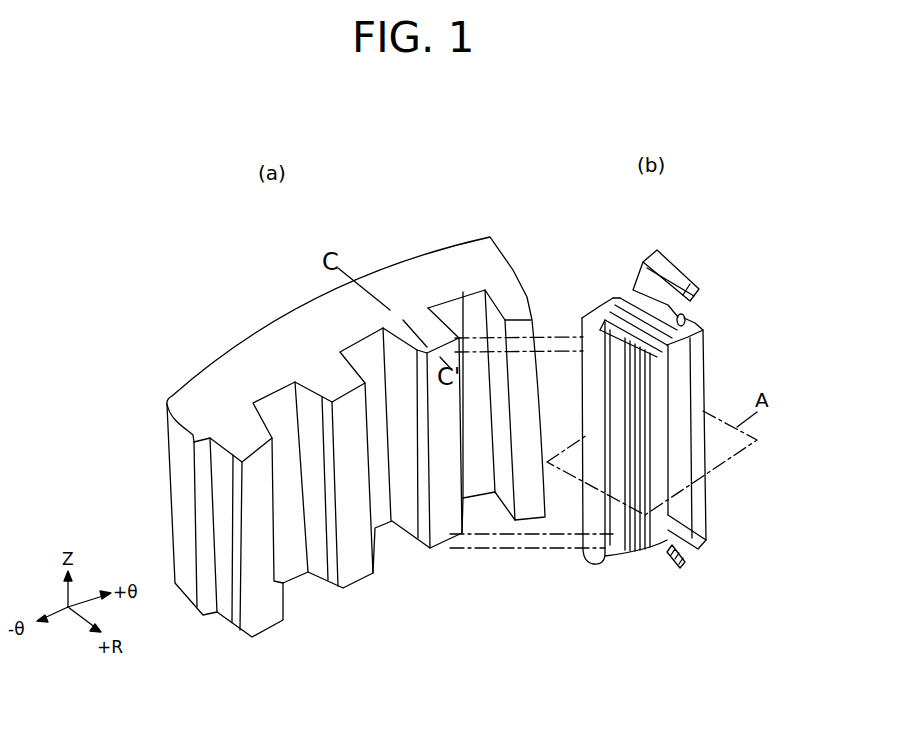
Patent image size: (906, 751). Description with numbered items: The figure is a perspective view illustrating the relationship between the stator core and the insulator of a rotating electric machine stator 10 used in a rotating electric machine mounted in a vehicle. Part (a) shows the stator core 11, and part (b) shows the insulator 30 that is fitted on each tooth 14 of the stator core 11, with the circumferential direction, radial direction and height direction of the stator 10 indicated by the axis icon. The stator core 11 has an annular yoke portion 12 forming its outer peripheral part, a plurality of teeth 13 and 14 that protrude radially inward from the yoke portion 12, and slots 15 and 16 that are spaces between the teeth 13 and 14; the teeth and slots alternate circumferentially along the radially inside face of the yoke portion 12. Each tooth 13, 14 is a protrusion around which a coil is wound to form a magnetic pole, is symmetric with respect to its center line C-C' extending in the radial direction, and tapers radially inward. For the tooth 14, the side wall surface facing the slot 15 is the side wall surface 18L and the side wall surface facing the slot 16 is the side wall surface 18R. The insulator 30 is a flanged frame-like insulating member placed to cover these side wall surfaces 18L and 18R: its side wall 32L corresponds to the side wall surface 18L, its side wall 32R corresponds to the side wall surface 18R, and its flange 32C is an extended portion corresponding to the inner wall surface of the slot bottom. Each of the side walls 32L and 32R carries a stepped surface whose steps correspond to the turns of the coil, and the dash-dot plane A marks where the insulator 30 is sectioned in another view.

The rotating electric machine stator 10 is at (228, 643).
The stator core 11 is at (176, 497).
The yoke portion 12 is at (195, 390).
The tooth 13 is at (361, 567).
The tooth 14 is at (443, 535).
The slot 15 is at (394, 553).
The slot 16 is at (483, 527).
The side wall surface 18L is at (386, 365).
The side wall surface 18R is at (452, 314).
The insulator 30 is at (670, 384).
The side wall 32L is at (622, 404).
The flange 32C is at (597, 302).
The side wall 32R is at (707, 382).